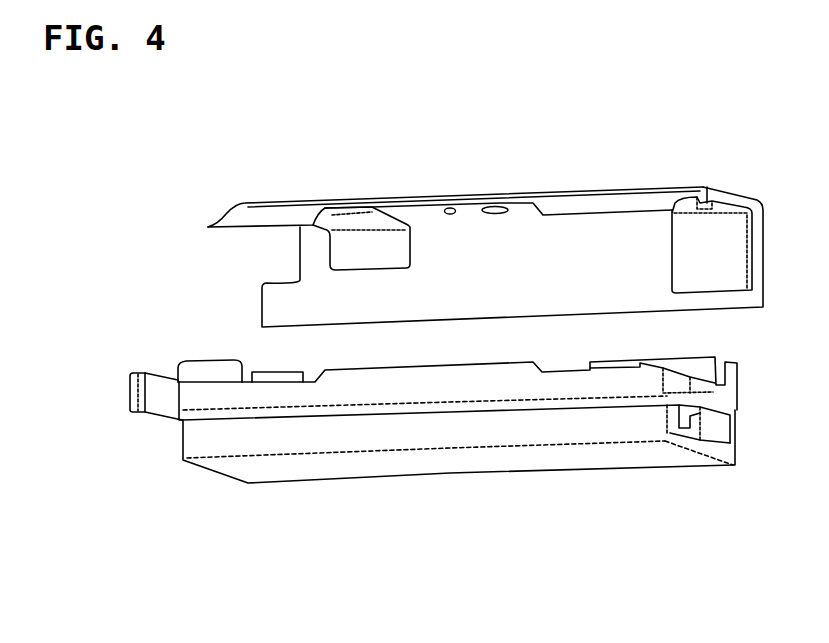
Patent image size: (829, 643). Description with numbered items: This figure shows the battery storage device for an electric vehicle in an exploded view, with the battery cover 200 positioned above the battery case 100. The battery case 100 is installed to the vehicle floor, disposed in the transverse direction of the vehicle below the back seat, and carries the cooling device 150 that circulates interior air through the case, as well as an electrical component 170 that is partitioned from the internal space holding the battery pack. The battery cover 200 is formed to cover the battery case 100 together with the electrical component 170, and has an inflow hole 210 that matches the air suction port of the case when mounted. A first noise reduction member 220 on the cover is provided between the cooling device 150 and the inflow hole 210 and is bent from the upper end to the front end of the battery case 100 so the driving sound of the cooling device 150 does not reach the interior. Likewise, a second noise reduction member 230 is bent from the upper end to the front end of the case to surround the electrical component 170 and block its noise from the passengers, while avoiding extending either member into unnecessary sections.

The battery case 100 is at (402, 484).
The cooling device 150 is at (198, 376).
The electrical component 170 is at (697, 372).
The battery cover 200 is at (562, 184).
The inflow hole 210 is at (493, 195).
The first noise reduction member 220 is at (352, 245).
The second noise reduction member 230 is at (725, 232).